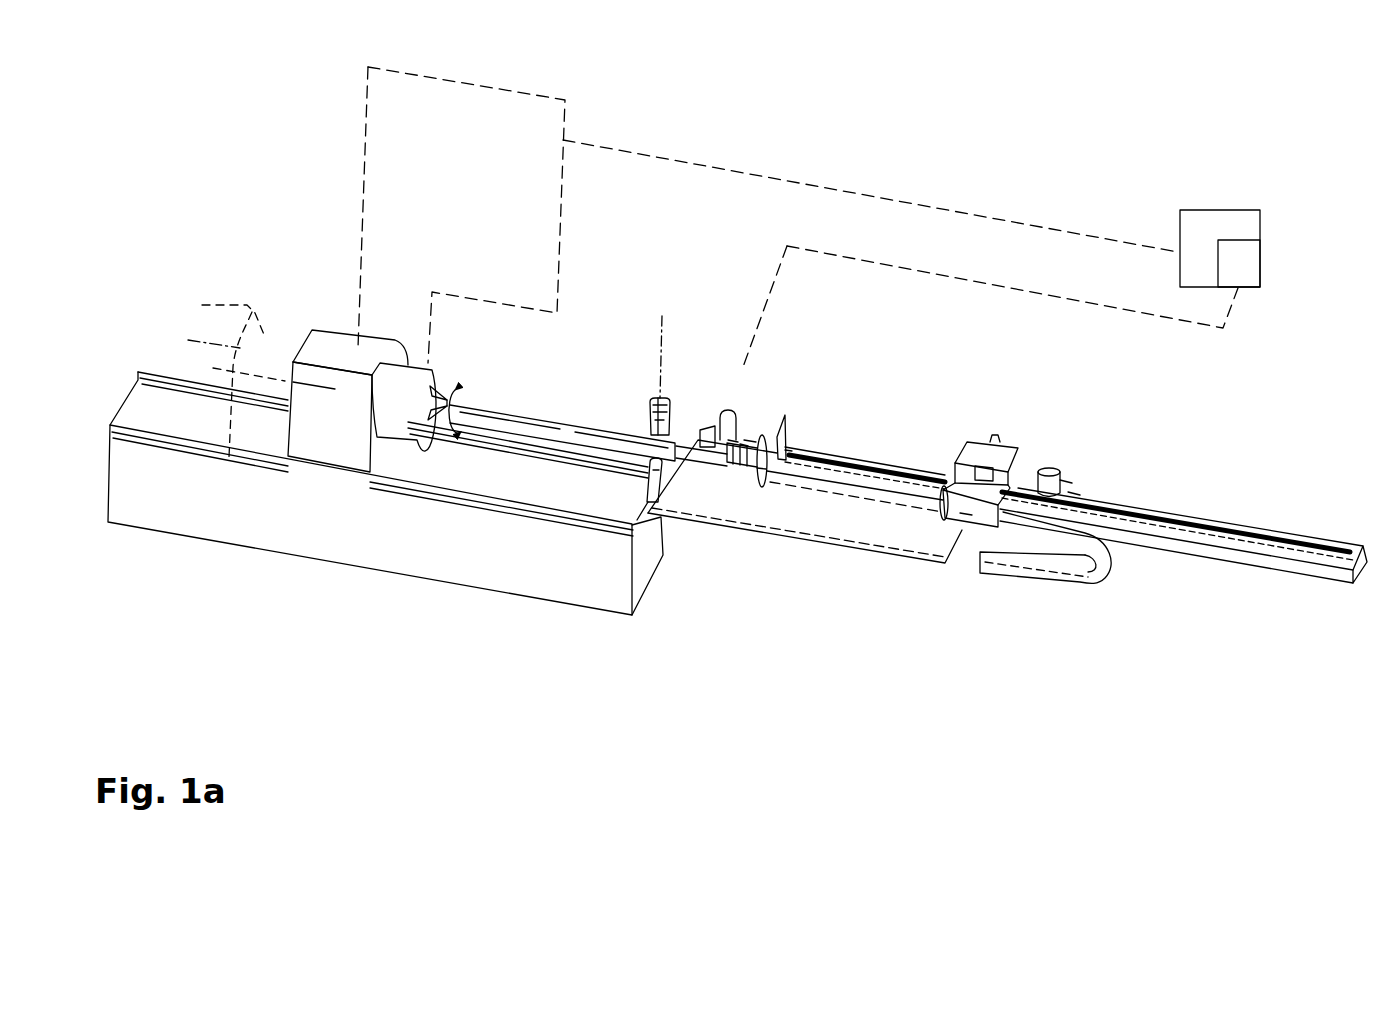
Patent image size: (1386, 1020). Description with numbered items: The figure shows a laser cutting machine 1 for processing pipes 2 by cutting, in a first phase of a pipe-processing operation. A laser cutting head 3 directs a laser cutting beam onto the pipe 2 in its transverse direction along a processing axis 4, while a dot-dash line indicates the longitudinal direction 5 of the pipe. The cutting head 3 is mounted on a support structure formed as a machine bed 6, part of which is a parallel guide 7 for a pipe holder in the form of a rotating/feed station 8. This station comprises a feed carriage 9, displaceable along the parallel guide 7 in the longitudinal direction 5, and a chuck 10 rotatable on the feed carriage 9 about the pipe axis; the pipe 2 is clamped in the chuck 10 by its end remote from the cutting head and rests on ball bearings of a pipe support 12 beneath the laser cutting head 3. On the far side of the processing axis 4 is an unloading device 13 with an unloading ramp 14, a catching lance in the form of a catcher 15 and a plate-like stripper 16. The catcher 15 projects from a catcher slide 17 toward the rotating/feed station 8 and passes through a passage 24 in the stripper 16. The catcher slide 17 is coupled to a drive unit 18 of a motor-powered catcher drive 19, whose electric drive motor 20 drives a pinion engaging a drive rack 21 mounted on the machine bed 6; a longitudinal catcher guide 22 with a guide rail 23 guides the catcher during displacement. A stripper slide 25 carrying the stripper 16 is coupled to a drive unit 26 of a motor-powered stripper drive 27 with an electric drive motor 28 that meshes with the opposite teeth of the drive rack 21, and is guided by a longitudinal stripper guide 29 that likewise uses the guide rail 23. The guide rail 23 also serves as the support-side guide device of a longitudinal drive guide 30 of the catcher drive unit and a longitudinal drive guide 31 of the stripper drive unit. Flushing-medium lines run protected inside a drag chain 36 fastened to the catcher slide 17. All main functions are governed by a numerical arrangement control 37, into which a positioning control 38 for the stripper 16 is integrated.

The laser cutting machine 1 is at (464, 272).
The pipe 2 is at (532, 412).
The laser cutting head 3 is at (650, 399).
The processing axis 4 is at (663, 327).
The longitudinal direction of the pipe 5 is at (599, 432).
The machine bed 6 is at (385, 506).
The parallel guide 7 is at (594, 598).
The rotating/feed station 8 is at (374, 356).
The feed carriage 9 is at (314, 449).
The chuck 10 is at (418, 362).
The pipe support 12 is at (650, 482).
The unloading device 13 is at (1067, 474).
The unloading ramp 14 is at (822, 533).
The catcher 15 is at (697, 470).
The stripper 16 is at (784, 412).
The catcher slide 17 is at (966, 514).
The drive unit 18 is at (1072, 495).
The catcher drive 19 is at (1070, 461).
The electric drive motor 20 is at (1051, 467).
The drive rack 21 is at (1160, 520).
The longitudinal catcher guide 22 is at (950, 484).
The guide rail 23 is at (874, 472).
The passage 24 is at (760, 470).
The stripper slide 25 is at (745, 446).
The drive unit 26 is at (732, 442).
The stripper drive 27 is at (712, 420).
The electric drive motor 28 is at (727, 410).
The longitudinal stripper guide 29 is at (789, 452).
The longitudinal drive guide 30 is at (1085, 507).
The longitudinal drive guide 31 is at (744, 445).
The drag chain 36 is at (1066, 584).
The numerical arrangement control 37 is at (1173, 227).
The positioning control 38 is at (1249, 275).